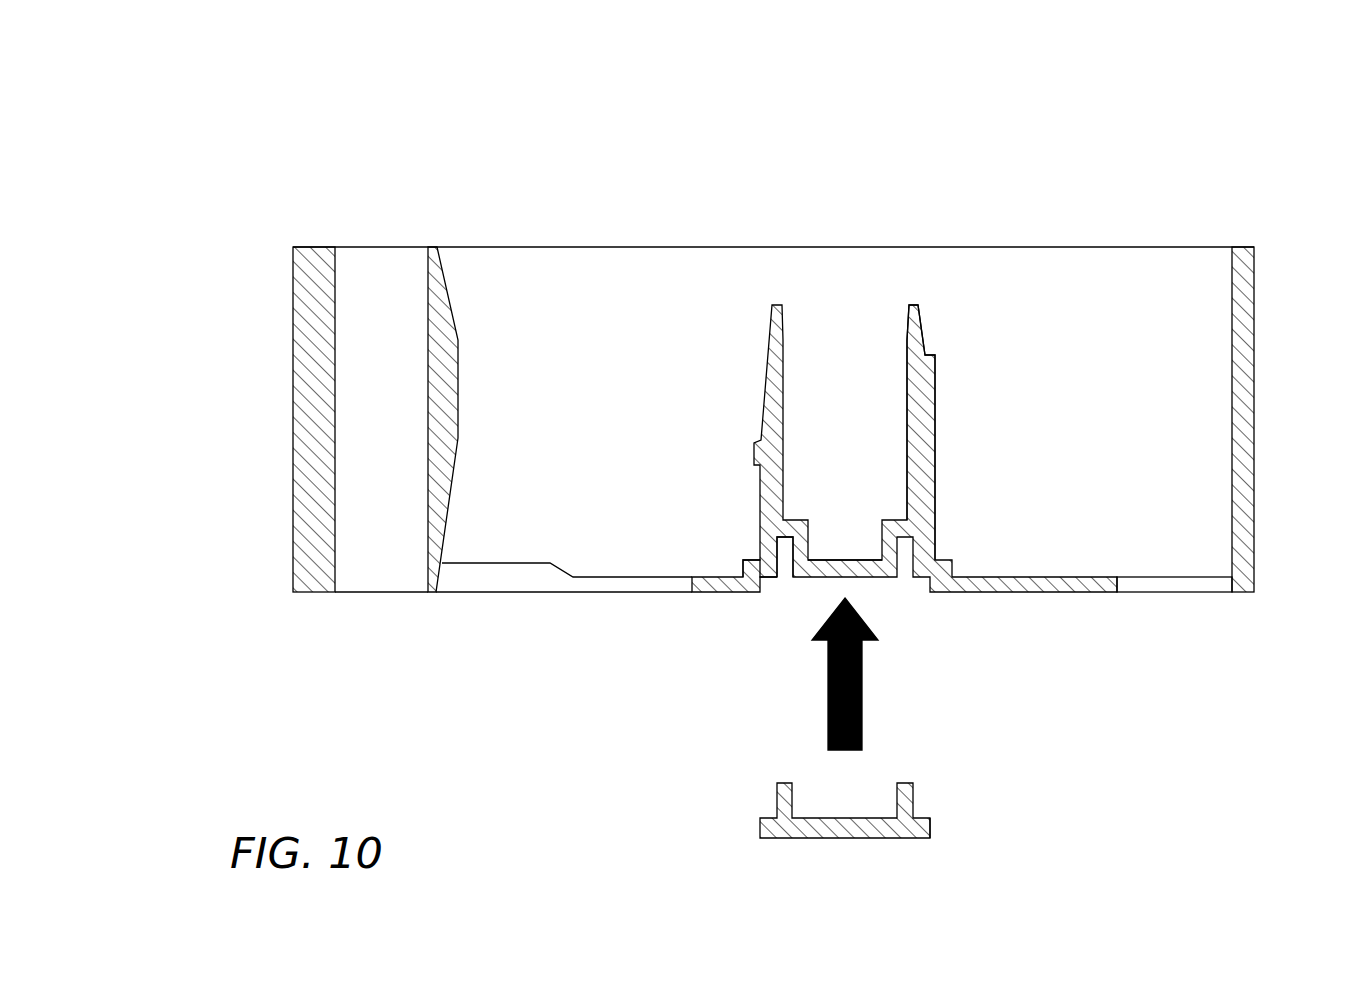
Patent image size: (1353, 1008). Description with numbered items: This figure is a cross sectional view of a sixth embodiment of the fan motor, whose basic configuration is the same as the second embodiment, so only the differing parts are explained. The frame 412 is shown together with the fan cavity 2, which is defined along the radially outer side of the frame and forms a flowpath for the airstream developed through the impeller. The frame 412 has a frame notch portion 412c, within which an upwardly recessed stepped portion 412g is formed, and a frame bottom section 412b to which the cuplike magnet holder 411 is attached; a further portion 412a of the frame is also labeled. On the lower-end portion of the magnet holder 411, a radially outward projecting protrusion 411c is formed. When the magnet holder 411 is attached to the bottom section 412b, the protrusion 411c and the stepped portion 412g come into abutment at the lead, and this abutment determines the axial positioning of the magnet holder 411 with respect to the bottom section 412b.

The fan cavity 2 is at (445, 387).
The frame 412 is at (970, 587).
The right post 412a is at (926, 427).
The frame bottom section 412b is at (838, 565).
The frame notch portion 412c is at (787, 565).
The stepped portion 412g is at (768, 580).
The magnet holder 411 is at (843, 828).
The protrusion 411c is at (928, 833).